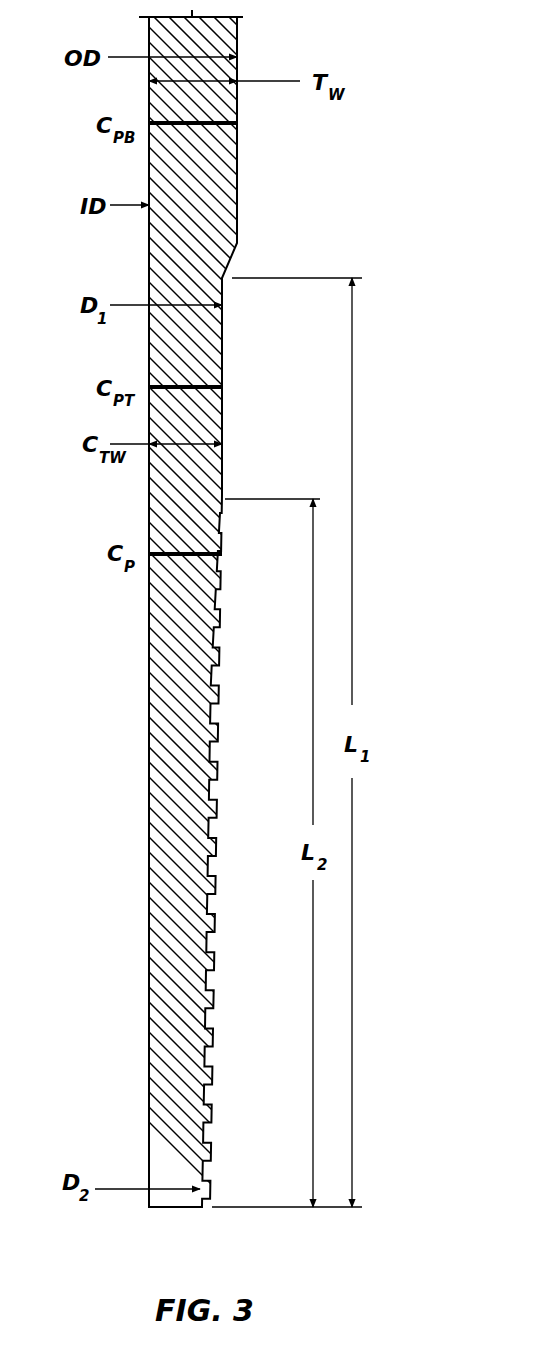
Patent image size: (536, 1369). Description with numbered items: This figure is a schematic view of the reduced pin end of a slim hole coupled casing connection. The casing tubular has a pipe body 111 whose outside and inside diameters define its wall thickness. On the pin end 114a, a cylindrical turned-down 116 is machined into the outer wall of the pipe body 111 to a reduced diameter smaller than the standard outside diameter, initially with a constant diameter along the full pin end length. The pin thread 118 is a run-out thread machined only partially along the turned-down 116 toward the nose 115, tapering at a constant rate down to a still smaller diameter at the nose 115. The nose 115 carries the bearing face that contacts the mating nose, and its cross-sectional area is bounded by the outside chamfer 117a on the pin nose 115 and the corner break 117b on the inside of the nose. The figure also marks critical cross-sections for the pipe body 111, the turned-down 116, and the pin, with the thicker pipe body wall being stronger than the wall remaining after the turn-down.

The pipe body 111 is at (217, 28).
The turned-down 116 is at (222, 352).
The pin end 114a is at (237, 425).
The pin thread 118 is at (217, 667).
The outside chamfer 117a is at (200, 1208).
The corner break 117b is at (150, 1208).
The nose 115 is at (173, 1208).